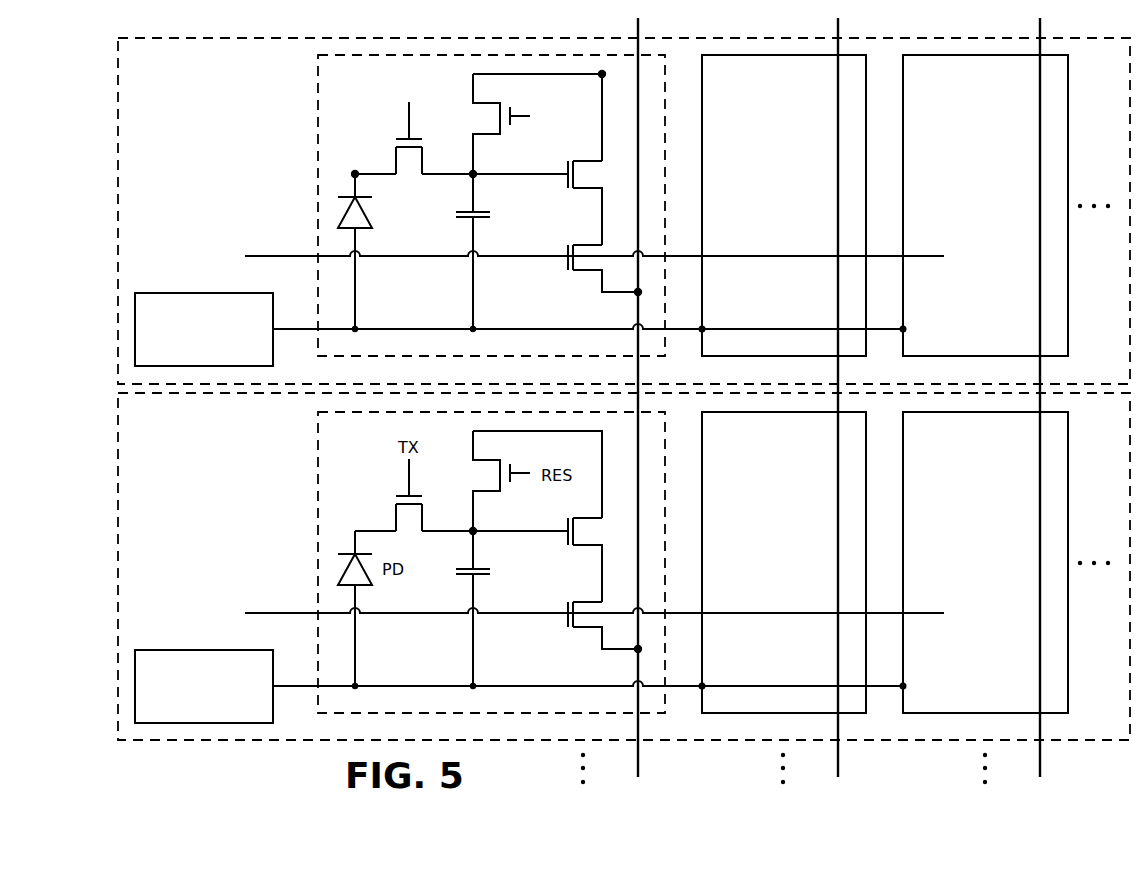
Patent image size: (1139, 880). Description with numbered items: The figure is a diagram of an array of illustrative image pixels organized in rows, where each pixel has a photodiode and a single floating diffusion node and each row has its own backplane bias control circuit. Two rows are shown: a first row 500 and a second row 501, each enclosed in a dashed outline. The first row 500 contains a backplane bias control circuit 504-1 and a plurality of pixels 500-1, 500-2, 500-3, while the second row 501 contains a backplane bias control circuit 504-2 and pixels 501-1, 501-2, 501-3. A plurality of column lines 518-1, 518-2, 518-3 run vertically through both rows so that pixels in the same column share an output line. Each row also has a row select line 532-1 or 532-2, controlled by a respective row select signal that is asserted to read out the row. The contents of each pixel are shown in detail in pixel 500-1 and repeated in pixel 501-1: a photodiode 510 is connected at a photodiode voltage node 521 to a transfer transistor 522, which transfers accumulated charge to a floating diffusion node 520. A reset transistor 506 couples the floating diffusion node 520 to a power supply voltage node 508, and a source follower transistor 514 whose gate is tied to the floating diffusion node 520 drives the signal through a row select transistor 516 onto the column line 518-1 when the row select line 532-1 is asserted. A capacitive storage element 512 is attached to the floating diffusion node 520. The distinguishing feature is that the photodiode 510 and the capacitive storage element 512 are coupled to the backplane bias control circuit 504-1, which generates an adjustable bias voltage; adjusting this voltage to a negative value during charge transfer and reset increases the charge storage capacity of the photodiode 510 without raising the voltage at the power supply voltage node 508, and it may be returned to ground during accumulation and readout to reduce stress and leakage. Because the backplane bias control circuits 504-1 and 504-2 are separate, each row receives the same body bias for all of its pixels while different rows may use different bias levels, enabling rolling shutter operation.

The row 500 is at (190, 38).
The row 501 is at (190, 741).
The pixel 500-1 is at (318, 80).
The second pixel of first row 500-2 is at (770, 87).
The third pixel of first row 500-3 is at (972, 87).
The pixel 501-1 is at (318, 437).
The second pixel of second row 501-2 is at (770, 444).
The third pixel of second row 501-3 is at (972, 444).
The backplane bias control circuit 504-1 is at (198, 293).
The backplane bias control circuit 504-2 is at (198, 650).
The reset transistor 506 is at (483, 120).
The power supply voltage node 508 is at (601, 75).
The photodiode 510 is at (340, 207).
The capacitive storage element 512 is at (460, 220).
The source follower transistor 514 is at (588, 183).
The row select transistor 516 is at (588, 268).
The column line 518-1 is at (638, 758).
The column line 518-2 is at (838, 758).
The column output line 518-3 is at (1040, 758).
The floating diffusion node 520 is at (471, 176).
The photodiode voltage node 521 is at (352, 174).
The transfer transistor 522 is at (396, 163).
The row select line 532-1 is at (298, 257).
The row select line 532-2 is at (298, 614).